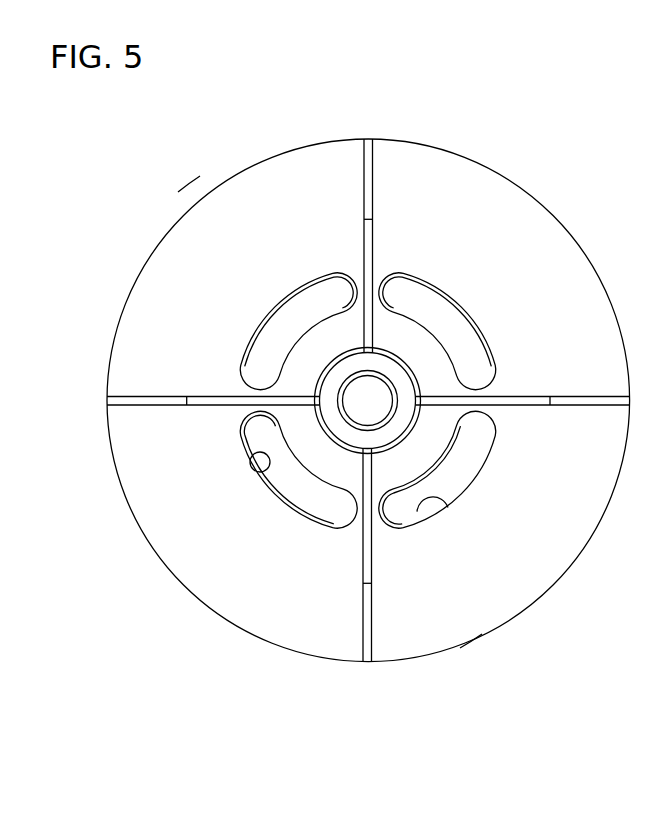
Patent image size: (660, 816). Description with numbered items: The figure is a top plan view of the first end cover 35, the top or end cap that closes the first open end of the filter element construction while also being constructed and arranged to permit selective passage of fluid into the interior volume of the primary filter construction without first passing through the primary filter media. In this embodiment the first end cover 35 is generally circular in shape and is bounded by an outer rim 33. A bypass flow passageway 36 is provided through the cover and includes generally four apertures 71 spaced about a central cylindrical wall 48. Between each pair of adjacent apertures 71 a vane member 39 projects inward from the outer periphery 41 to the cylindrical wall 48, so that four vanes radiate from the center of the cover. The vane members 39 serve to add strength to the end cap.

The outer rim 33 is at (516, 184).
The first end cover 35 is at (176, 190).
The bypass flow passageway 36 is at (265, 318).
The vane member 39 is at (372, 244).
The outer periphery 41 is at (482, 634).
The central cylindrical wall 48 is at (418, 420).
The apertures 71 is at (255, 473).